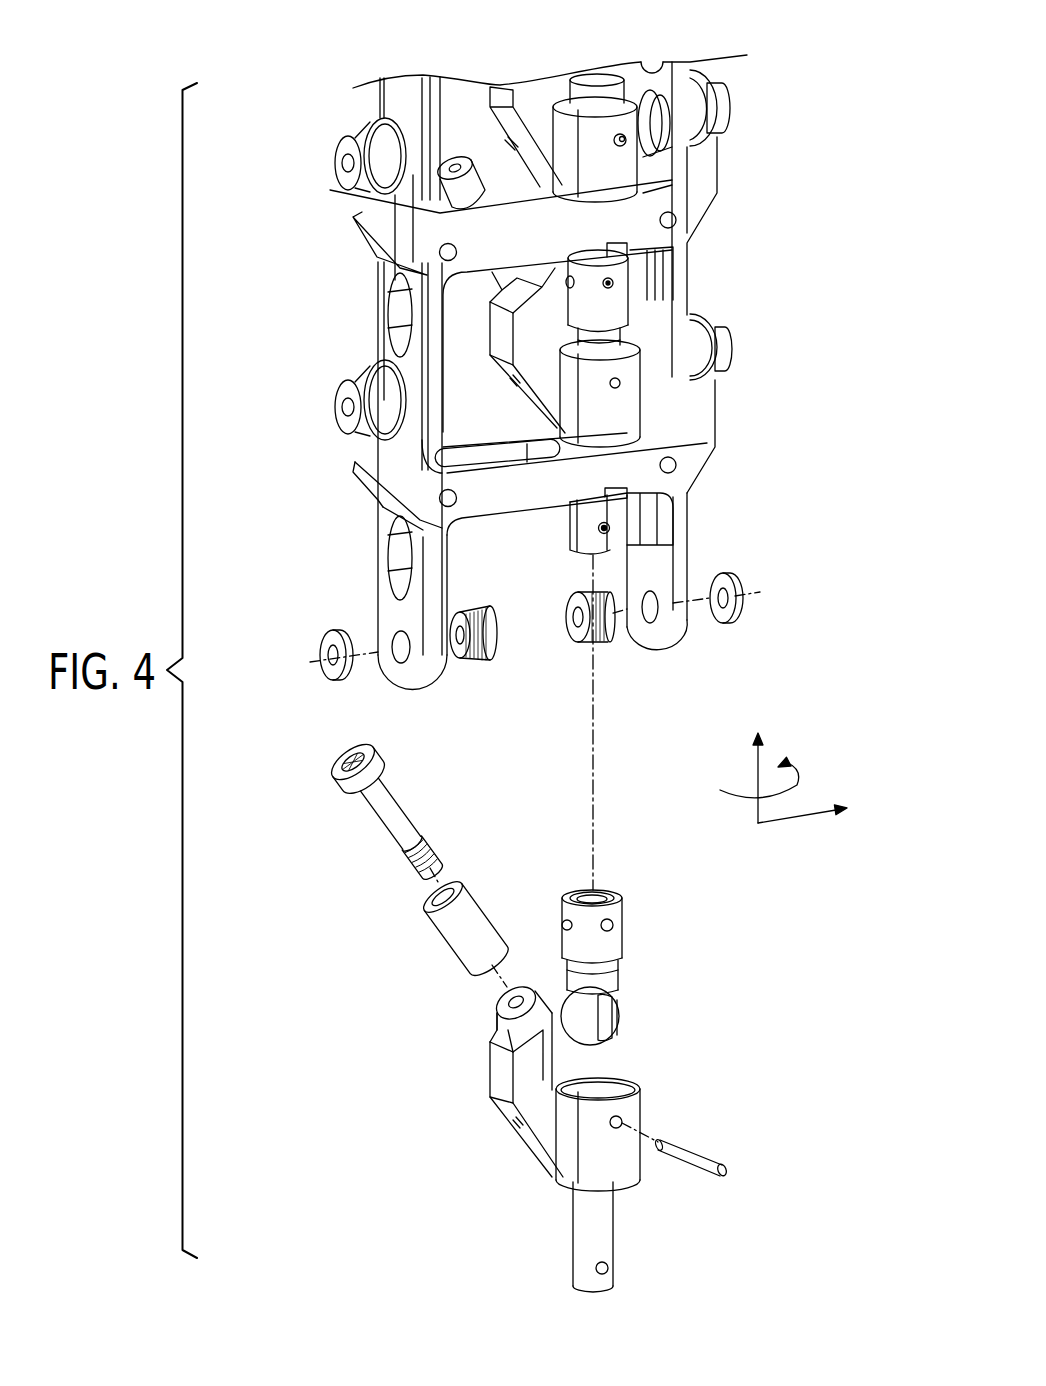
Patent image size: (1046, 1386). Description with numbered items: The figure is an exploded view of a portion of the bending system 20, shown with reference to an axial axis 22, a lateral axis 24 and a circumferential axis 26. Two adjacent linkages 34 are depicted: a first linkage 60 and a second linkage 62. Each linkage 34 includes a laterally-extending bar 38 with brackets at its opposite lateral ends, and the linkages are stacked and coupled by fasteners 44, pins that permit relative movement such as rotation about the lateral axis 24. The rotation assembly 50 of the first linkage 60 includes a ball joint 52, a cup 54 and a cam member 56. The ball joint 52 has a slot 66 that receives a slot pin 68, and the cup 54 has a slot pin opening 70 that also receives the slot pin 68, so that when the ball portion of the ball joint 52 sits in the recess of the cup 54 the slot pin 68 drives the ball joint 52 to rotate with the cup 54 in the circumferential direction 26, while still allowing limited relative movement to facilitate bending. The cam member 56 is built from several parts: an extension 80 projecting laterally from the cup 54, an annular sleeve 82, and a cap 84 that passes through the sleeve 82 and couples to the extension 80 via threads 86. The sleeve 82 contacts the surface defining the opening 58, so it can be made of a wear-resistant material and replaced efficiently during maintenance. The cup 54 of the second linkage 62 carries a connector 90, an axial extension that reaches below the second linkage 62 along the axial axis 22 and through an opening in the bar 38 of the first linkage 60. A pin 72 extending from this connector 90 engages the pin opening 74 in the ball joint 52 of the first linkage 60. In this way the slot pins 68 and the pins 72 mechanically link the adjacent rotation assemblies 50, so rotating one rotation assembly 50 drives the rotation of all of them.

The bending system 20 is at (783, 230).
The axial axis 22 is at (750, 762).
The lateral axis 24 is at (797, 818).
The circumferential axis 26 is at (800, 790).
The linkage 34 is at (375, 490).
The bar 38 is at (503, 497).
The fastener 44 is at (345, 146).
The rotation assembly 50 is at (483, 357).
The ball joint 52 is at (612, 305).
The cup 54 is at (630, 410).
The cam member 56 is at (503, 167).
The opening 58 is at (543, 195).
The first linkage 60 is at (532, 476).
The second linkage 62 is at (353, 217).
The slot 66 is at (613, 1030).
The slot pin 68 is at (690, 1152).
The slot pin opening 70 is at (619, 1129).
The pin 72 is at (614, 283).
The pin opening 74 is at (605, 282).
The extension 80 is at (502, 330).
The sleeve 82 is at (443, 213).
The cap 84 is at (457, 160).
The threads 86 is at (427, 848).
The connector 90 is at (587, 543).